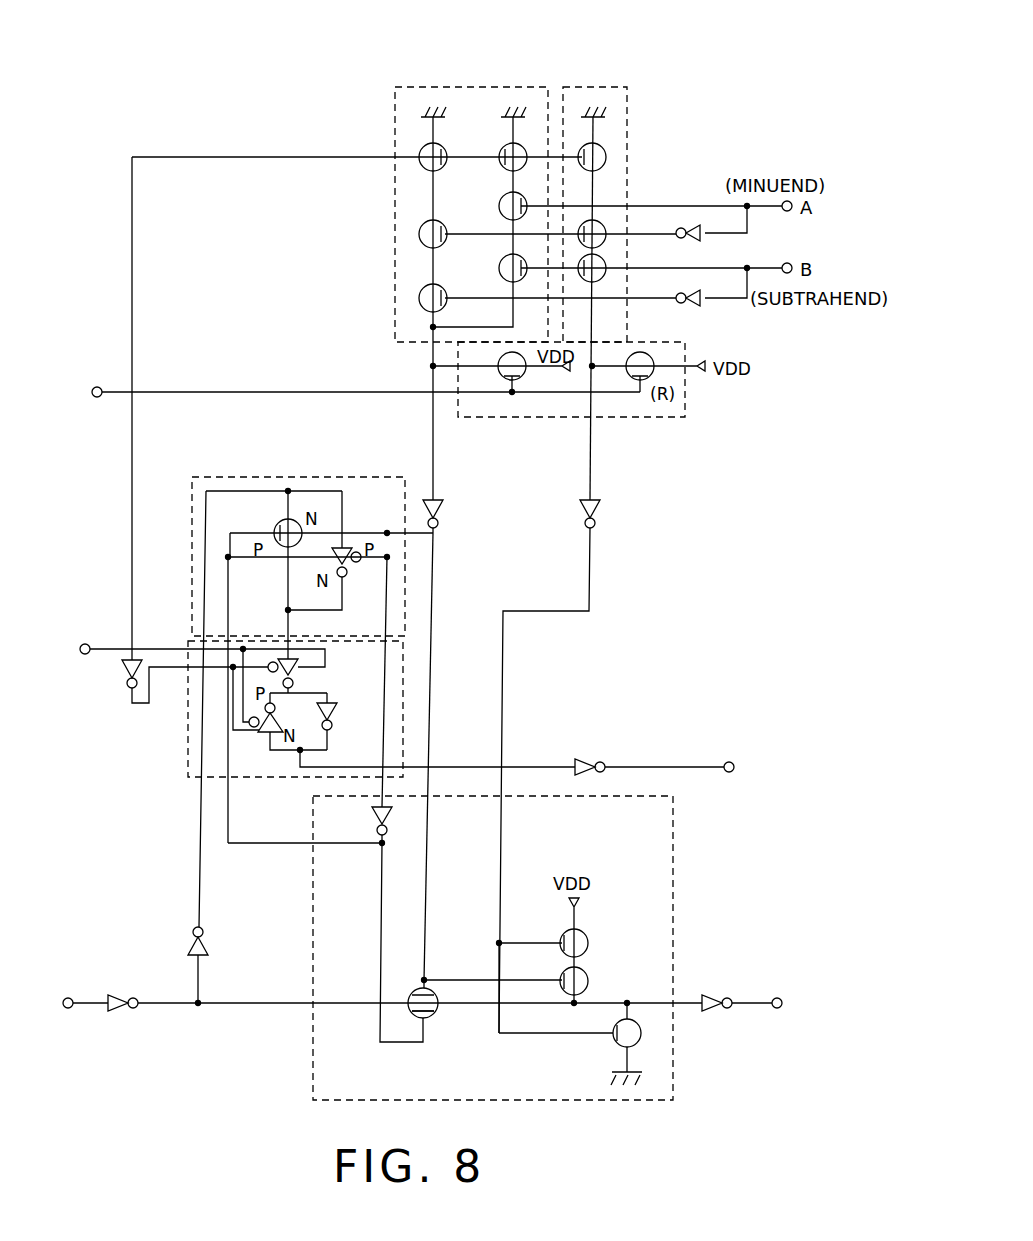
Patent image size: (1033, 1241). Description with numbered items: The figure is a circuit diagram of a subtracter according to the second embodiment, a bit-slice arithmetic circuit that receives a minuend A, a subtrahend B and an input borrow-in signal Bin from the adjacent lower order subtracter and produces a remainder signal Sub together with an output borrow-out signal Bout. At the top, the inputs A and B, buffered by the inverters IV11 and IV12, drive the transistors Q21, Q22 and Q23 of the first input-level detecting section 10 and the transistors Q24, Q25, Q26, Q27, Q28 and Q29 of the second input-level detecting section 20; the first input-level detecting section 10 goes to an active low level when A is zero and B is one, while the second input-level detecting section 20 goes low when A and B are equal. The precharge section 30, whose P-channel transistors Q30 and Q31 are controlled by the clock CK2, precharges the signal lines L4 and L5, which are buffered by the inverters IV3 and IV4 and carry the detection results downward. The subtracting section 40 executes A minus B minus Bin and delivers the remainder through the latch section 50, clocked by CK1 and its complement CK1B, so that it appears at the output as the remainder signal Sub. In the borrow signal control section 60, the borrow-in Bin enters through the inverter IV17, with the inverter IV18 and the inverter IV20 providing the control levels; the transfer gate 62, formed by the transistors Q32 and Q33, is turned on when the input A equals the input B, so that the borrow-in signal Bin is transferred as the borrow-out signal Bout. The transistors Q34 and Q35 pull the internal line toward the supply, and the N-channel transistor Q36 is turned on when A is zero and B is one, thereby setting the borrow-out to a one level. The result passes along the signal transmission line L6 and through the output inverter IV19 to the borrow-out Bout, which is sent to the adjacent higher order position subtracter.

The first input-level detecting section 10 is at (597, 87).
The second input-level detecting section 20 is at (395, 118).
The precharge section 30 is at (688, 400).
The subtracting section 40 is at (237, 477).
The latch section 50 is at (188, 712).
The borrow signal control section 60 is at (673, 1067).
The transfer gate 62 is at (415, 1018).
The N-channel transistor Q21 is at (624, 147).
The N-channel transistor (D input) Q22 is at (633, 214).
The N-channel transistor Q23 is at (617, 264).
The N-channel transistor Q24 is at (498, 147).
The N-channel transistor Q25 is at (494, 196).
The N-channel transistor Q26 is at (495, 259).
The N-channel transistor Q27 is at (405, 154).
The N-channel transistor Q28 is at (405, 227).
The N-channel transistor Q29 is at (405, 291).
The P-channel precharge transistor Q30 is at (502, 402).
The P-channel precharge transistor Q31 is at (648, 353).
The N-channel transistor Q32 is at (411, 984).
The P-channel transistor Q33 is at (437, 1031).
The P-channel transistor Q34 is at (603, 935).
The P-channel transistor Q35 is at (603, 984).
The N-ch transistor Q36 is at (615, 1044).
The inverter IV3 is at (606, 514).
The inverter IV4 is at (448, 516).
The inverter IV11 is at (709, 239).
The inverter IV12 is at (709, 306).
The inverter IV17 is at (124, 1017).
The inverter IV18 is at (218, 965).
The inverter IV19 is at (719, 992).
The inverter IV20 is at (355, 825).
The signal line L4 is at (590, 465).
The signal line L5 is at (433, 465).
The signal transmission line L6 is at (478, 1006).
The clock input CK1 is at (180, 654).
The inverted clock CK1B is at (151, 696).
The clock input CK2 is at (341, 394).
The remainder signal Sub is at (676, 769).
The input borrow-in signal Bin is at (65, 1004).
The output borrow-out signal Bout is at (756, 1018).